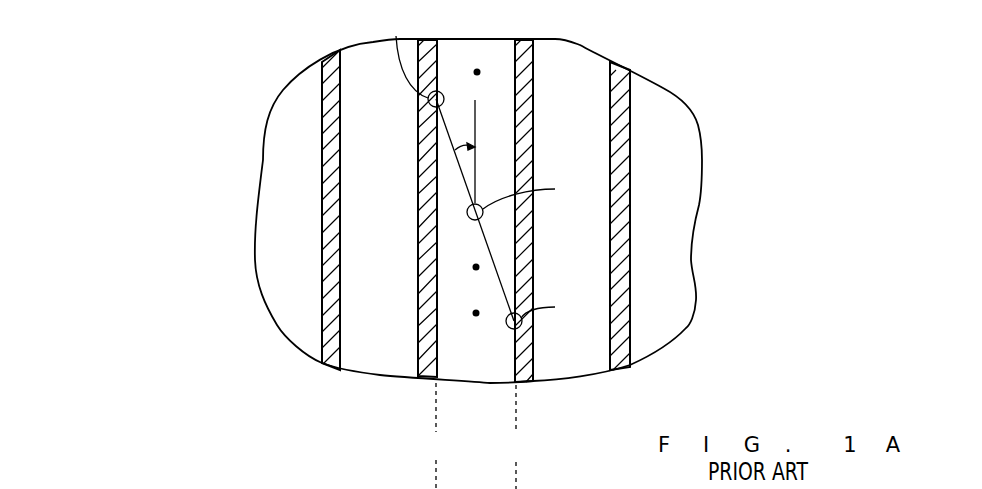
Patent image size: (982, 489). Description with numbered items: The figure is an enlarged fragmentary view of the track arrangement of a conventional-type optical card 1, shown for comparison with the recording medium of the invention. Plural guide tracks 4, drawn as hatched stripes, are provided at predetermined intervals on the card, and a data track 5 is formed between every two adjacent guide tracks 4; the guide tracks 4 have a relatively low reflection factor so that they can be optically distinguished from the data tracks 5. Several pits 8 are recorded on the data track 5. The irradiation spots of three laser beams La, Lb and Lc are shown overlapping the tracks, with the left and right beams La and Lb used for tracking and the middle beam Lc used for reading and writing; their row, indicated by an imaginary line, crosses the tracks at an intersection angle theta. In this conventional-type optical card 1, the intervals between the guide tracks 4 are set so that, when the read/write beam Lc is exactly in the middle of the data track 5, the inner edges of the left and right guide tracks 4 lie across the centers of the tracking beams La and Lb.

The conventional-type optical card 1 is at (277, 99).
The guide track 4 is at (332, 368).
The data track 5 is at (380, 360).
The pit 8 is at (481, 66).